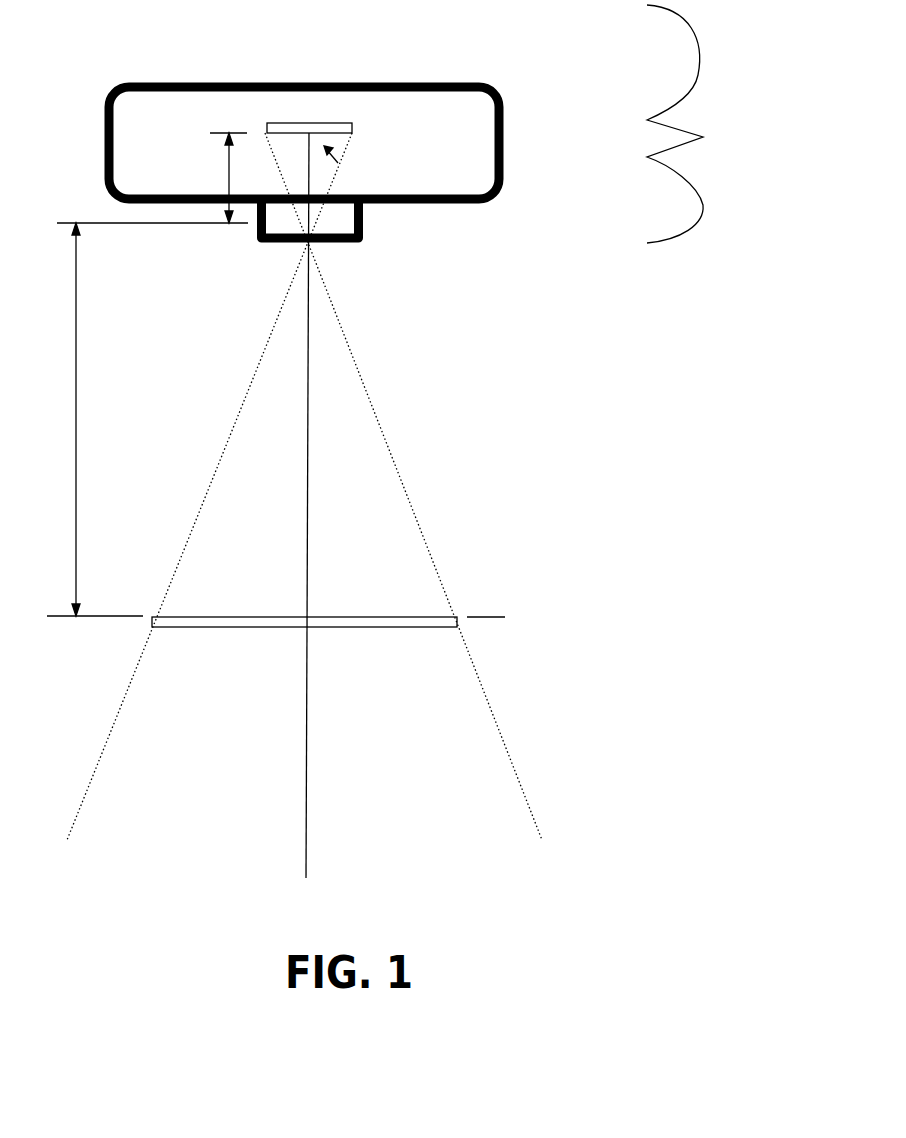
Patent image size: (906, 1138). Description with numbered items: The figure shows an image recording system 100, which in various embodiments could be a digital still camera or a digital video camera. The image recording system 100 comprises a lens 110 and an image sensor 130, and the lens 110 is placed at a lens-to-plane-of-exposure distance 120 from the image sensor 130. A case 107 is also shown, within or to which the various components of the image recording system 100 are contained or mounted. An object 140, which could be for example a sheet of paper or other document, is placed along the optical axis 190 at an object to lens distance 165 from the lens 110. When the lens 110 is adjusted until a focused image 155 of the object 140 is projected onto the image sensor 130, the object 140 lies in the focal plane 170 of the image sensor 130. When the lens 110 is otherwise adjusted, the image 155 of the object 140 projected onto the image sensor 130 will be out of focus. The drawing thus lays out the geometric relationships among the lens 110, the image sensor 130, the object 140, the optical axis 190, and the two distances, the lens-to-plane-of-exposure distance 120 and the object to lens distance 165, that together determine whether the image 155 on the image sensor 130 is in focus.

The image recording system 100 is at (723, 138).
The case 107 is at (483, 83).
The lens 110 is at (363, 218).
The lens-to-plane-of-exposure distance 120 is at (226, 166).
The image sensor 130 is at (282, 123).
The object 140 is at (340, 628).
The focused image 155 is at (338, 163).
The object to lens distance 165 is at (77, 537).
The focal plane 170 is at (93, 617).
The optical axis 190 is at (305, 860).